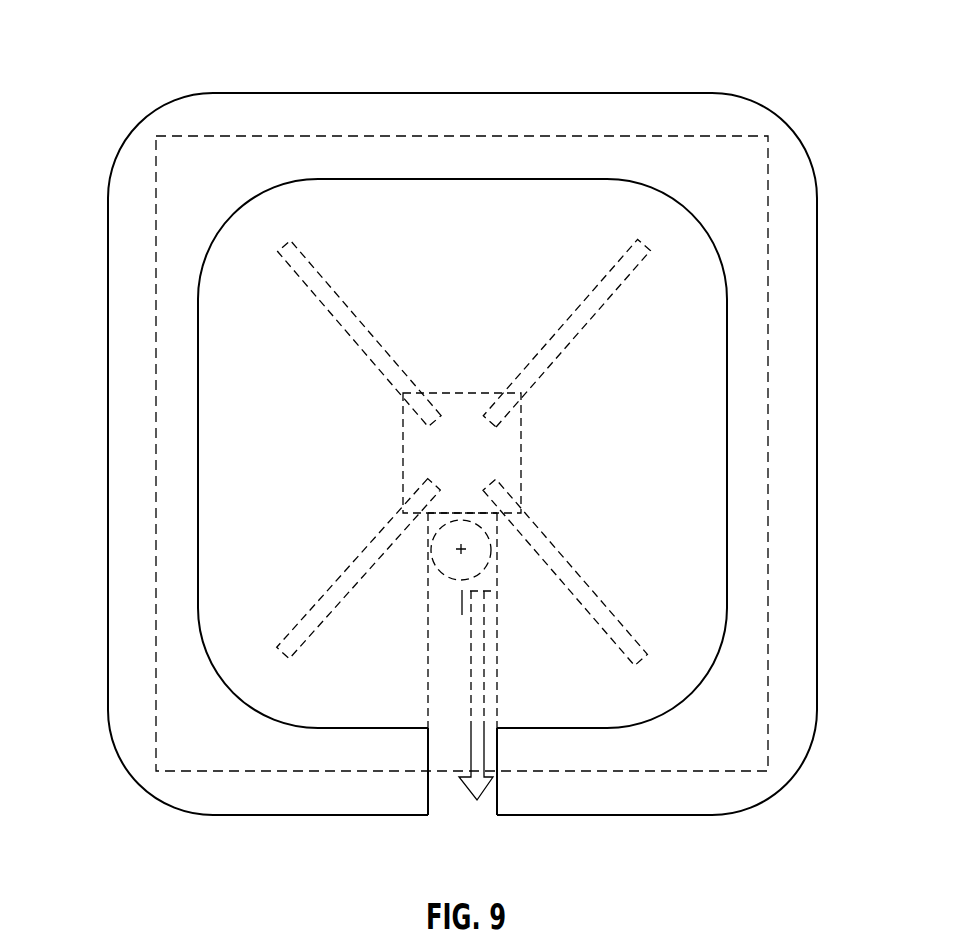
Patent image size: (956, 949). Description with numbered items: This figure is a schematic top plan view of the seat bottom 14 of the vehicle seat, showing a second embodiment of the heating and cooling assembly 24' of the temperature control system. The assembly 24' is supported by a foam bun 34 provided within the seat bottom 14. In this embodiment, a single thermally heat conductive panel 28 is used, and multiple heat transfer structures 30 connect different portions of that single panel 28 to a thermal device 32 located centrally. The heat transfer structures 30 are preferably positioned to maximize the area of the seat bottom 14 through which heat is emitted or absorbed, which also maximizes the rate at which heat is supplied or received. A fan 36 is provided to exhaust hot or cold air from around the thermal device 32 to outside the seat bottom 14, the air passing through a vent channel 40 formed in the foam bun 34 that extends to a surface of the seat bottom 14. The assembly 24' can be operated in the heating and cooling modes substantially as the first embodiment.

The seat bottom 14 is at (668, 92).
The heating and cooling assembly 24' is at (462, 408).
The thermally conductive panel 28 is at (456, 179).
The heat transfer structures 30 is at (383, 343).
The thermal device 32 is at (522, 446).
The foam bun 34 is at (140, 528).
The fan 36 is at (457, 580).
The vent channel 40 is at (447, 782).